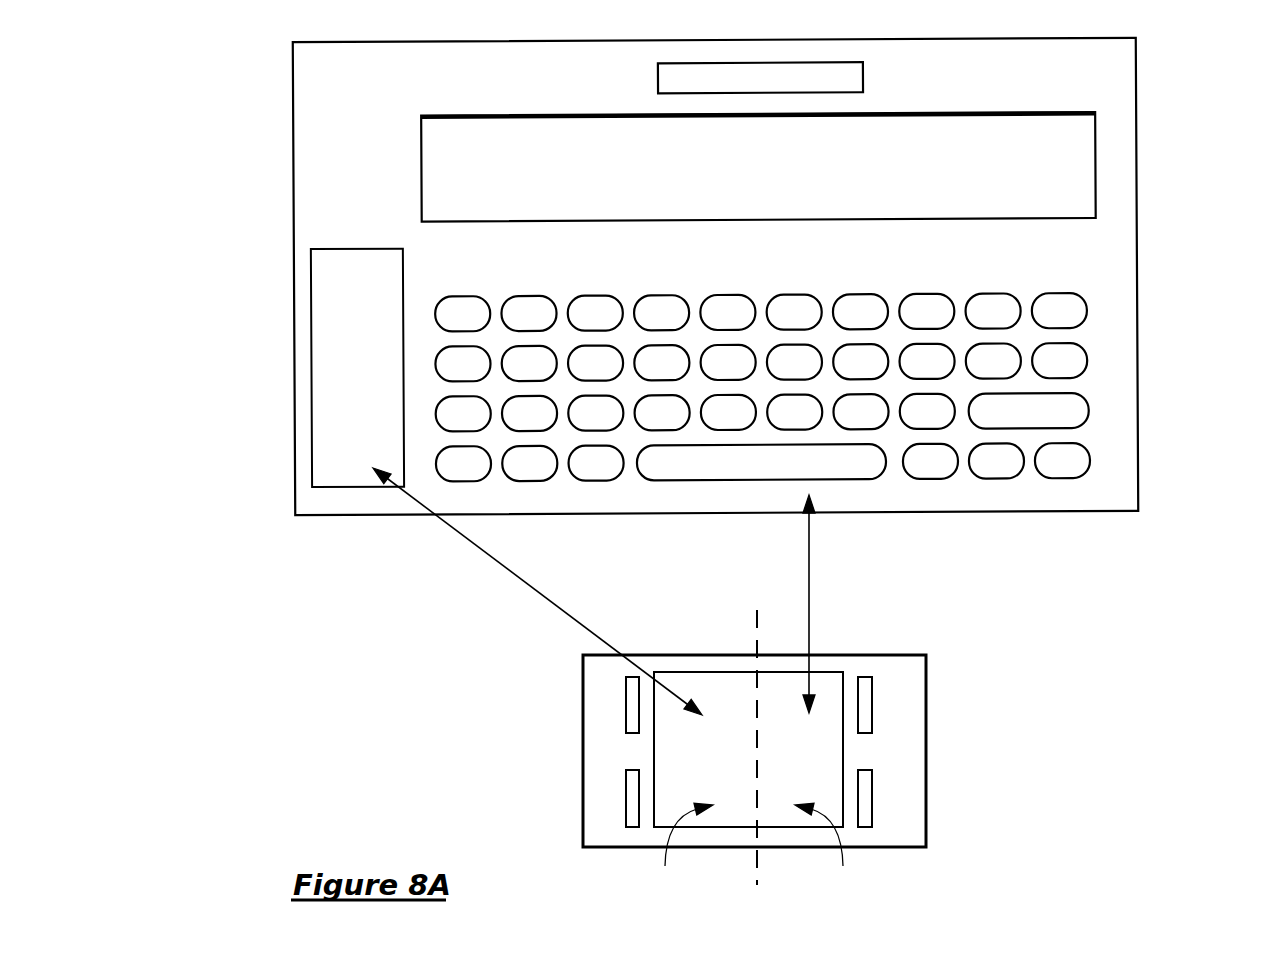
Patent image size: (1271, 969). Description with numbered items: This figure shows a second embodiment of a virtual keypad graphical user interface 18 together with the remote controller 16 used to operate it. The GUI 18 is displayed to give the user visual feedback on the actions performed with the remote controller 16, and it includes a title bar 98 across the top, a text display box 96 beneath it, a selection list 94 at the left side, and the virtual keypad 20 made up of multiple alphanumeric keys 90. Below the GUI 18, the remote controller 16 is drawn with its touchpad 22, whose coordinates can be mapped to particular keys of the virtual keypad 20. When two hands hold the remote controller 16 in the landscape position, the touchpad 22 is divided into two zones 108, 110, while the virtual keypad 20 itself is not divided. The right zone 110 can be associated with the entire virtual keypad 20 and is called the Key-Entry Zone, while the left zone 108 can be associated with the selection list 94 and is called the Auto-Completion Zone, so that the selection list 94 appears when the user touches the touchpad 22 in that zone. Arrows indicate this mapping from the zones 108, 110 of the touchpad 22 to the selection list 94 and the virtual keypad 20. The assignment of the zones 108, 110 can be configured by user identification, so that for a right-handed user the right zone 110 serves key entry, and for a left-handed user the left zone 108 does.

The graphical user interface 18 is at (294, 81).
The title bar 98 is at (865, 77).
The text display box 96 is at (1008, 114).
The selection list 94 is at (340, 247).
The alphanumeric key 90 is at (1060, 295).
The virtual keypad 20 is at (843, 366).
The remote controller 16 is at (693, 655).
The touchpad 22 is at (829, 672).
The left zone 108 is at (683, 850).
The right zone 110 is at (827, 848).